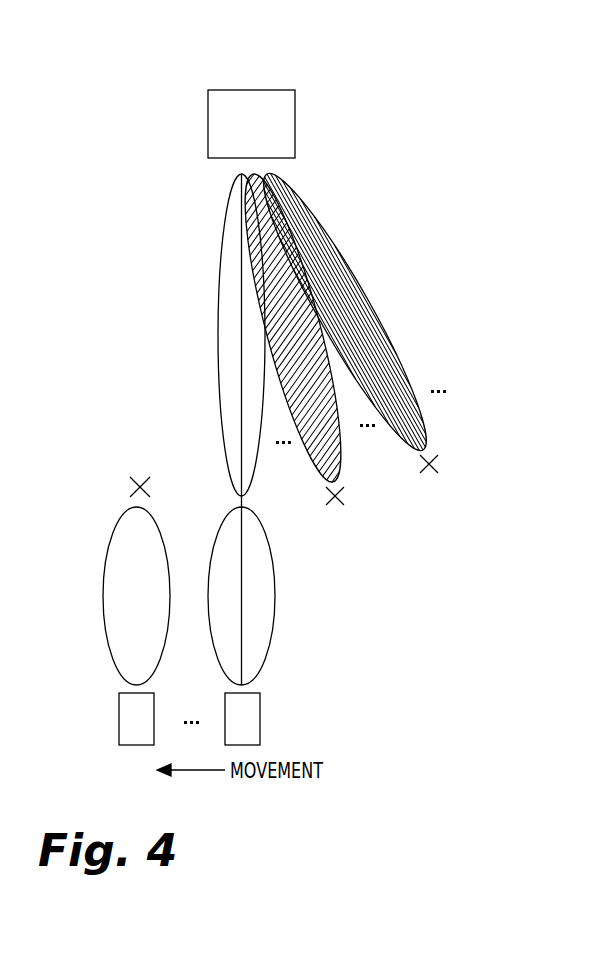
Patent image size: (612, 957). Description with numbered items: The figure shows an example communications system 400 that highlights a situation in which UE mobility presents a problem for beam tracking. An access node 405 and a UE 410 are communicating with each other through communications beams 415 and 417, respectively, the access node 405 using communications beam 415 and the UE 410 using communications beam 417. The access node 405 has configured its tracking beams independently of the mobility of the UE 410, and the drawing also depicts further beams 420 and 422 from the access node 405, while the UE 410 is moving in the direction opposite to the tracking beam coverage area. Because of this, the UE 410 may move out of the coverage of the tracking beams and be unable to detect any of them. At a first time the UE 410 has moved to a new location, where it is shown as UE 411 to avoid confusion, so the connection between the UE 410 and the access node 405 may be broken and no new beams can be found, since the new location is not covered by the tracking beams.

The communications system 400 is at (346, 70).
The access node 405 is at (228, 90).
The UE 410 is at (226, 694).
The UE at new location 411 is at (120, 694).
The communications beam 415 is at (219, 326).
The communications beam 417 is at (226, 518).
The beam 420 is at (322, 470).
The beam 422 is at (412, 454).